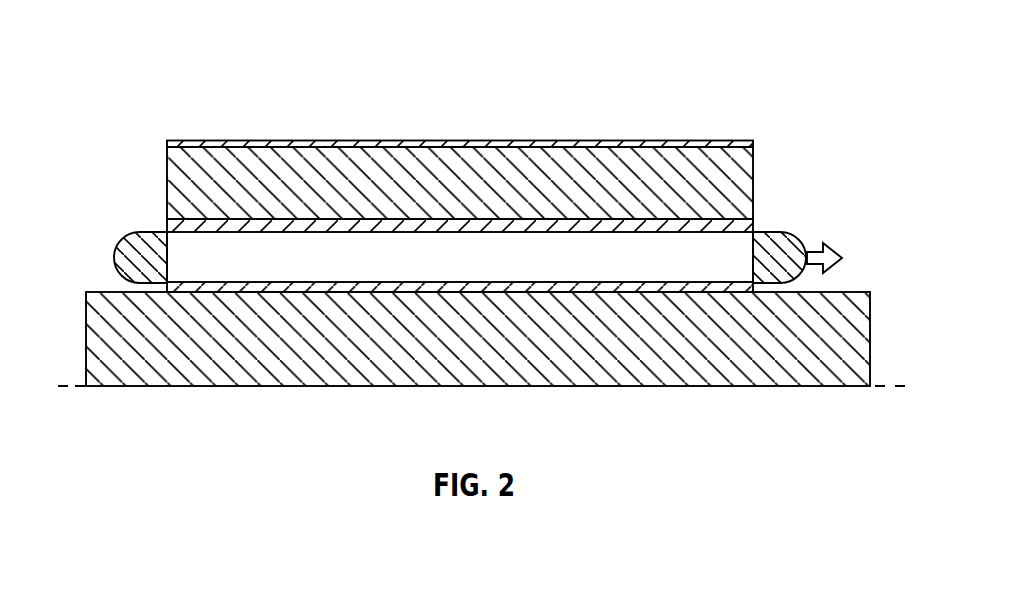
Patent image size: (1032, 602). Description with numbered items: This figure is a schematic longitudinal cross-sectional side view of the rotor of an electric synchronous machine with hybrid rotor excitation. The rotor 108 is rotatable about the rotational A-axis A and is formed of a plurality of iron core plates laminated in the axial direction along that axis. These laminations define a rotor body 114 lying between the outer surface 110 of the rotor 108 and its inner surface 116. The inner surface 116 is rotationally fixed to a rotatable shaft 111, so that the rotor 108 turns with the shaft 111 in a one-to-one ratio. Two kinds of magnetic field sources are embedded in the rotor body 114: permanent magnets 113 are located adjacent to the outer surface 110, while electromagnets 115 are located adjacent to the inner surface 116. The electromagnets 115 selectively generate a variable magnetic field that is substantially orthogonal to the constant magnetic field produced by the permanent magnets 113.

The rotor 108 is at (793, 17).
The outer surface 110 is at (610, 140).
The rotatable shaft 111 is at (862, 313).
The permanent magnets 113 is at (151, 179).
The rotor body 114 is at (757, 232).
The electromagnets 115 is at (98, 255).
The inner surface 116 is at (333, 292).
The A-axis A is at (885, 385).